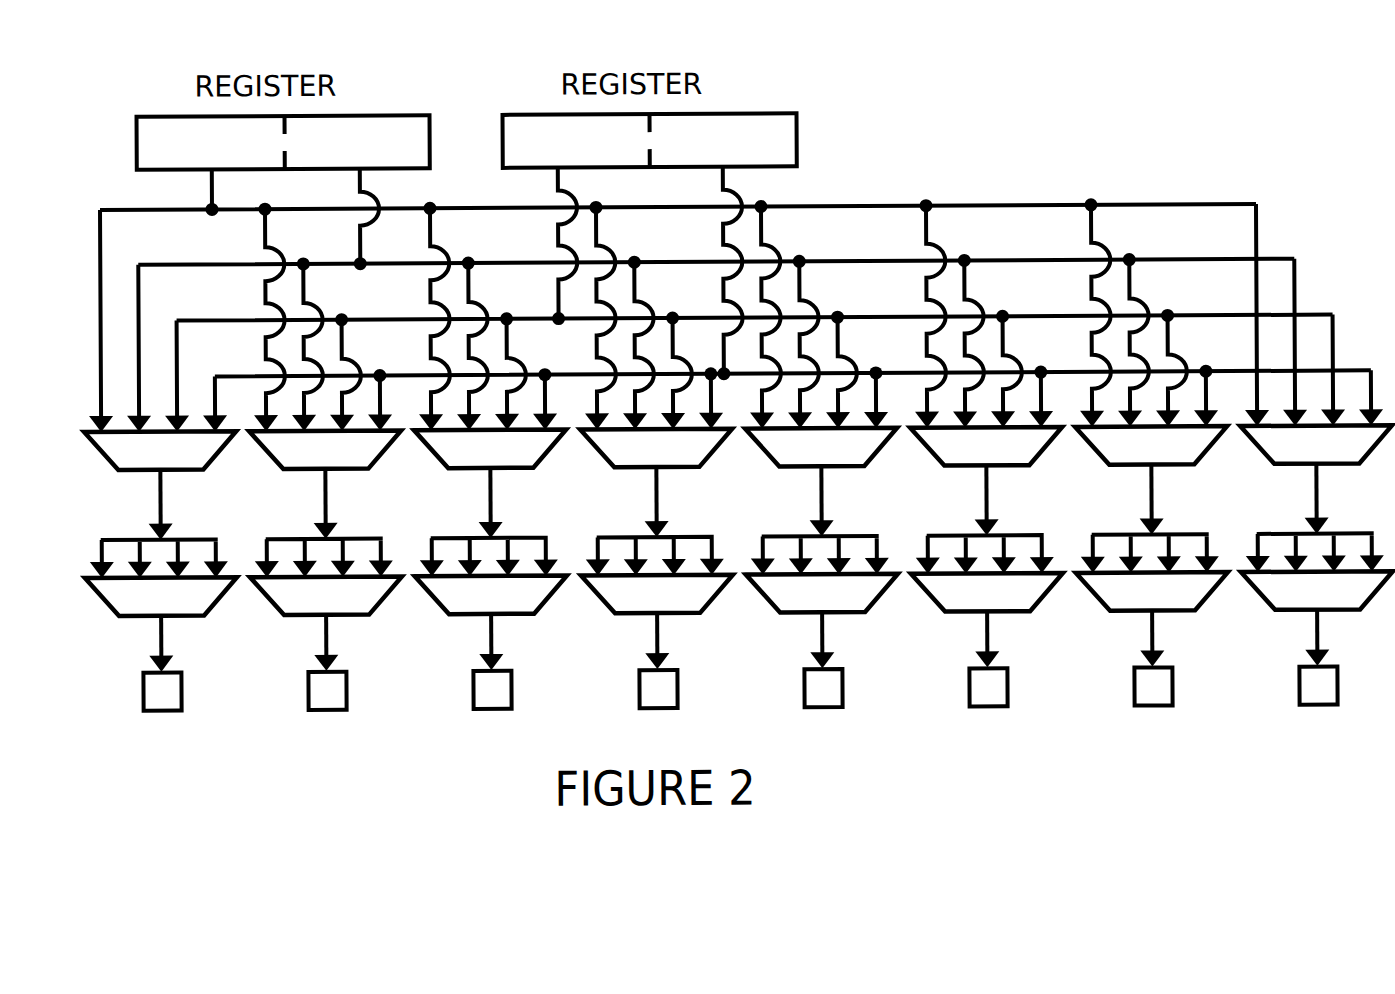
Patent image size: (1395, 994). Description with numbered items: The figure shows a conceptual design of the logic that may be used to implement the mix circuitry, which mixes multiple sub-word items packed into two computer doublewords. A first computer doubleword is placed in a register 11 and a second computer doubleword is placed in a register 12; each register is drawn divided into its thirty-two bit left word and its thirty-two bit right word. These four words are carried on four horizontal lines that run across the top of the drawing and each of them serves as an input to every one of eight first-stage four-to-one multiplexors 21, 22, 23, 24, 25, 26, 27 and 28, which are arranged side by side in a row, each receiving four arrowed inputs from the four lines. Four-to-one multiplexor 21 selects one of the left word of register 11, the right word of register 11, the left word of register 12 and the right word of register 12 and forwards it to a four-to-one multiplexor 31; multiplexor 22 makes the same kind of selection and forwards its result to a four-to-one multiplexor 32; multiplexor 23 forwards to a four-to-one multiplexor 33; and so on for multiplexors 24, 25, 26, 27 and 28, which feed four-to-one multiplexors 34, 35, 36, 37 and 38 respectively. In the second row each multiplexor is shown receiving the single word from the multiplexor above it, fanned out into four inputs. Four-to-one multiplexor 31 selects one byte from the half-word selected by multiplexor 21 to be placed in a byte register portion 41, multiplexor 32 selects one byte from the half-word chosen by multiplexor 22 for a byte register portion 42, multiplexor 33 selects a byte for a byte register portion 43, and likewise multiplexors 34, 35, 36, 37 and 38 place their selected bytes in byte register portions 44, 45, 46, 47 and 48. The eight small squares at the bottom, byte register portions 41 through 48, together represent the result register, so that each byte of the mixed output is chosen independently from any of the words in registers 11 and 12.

The register 11 is at (430, 118).
The register 12 is at (797, 118).
The four-to-one multiplexor 21 is at (98, 471).
The four-to-one multiplexor 22 is at (325, 484).
The four-to-one multiplexor 23 is at (490, 484).
The four-to-one multiplexor 24 is at (656, 483).
The four-to-one multiplexor 25 is at (821, 482).
The four-to-one multiplexor 26 is at (986, 481).
The four-to-one multiplexor 27 is at (1151, 480).
The four-to-one multiplexor 28 is at (1316, 479).
The four-to-one multiplexor 31 is at (98, 618).
The four-to-one multiplexor 32 is at (326, 604).
The four-to-one multiplexor 33 is at (491, 604).
The four-to-one multiplexor 34 is at (657, 603).
The four-to-one multiplexor 35 is at (822, 602).
The four-to-one multiplexor 36 is at (987, 601).
The four-to-one multiplexor 37 is at (1152, 600).
The four-to-one multiplexor 38 is at (1317, 599).
The byte register portion 41 is at (179, 705).
The byte register portion 42 is at (344, 705).
The byte register portion 43 is at (509, 704).
The byte register portion 44 is at (675, 703).
The byte register portion 45 is at (840, 702).
The byte register portion 46 is at (1005, 701).
The byte register portion 47 is at (1170, 700).
The byte register portion 48 is at (1335, 699).